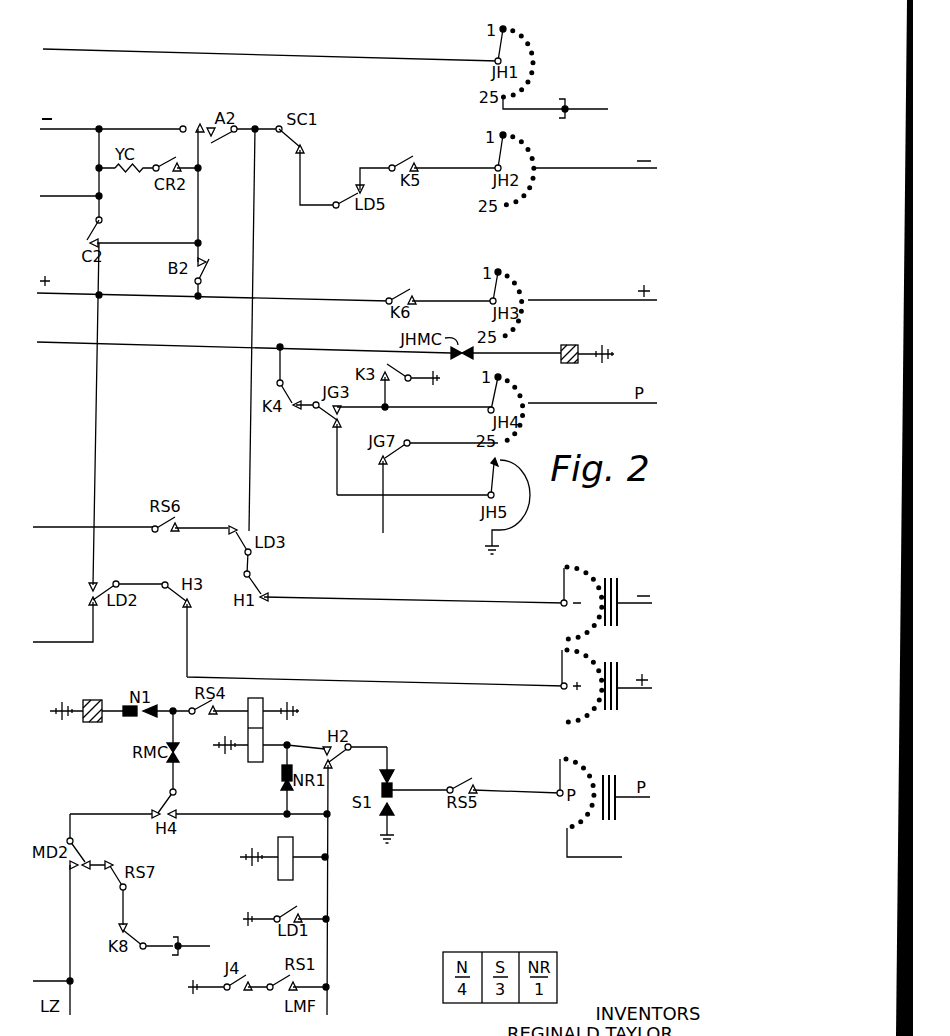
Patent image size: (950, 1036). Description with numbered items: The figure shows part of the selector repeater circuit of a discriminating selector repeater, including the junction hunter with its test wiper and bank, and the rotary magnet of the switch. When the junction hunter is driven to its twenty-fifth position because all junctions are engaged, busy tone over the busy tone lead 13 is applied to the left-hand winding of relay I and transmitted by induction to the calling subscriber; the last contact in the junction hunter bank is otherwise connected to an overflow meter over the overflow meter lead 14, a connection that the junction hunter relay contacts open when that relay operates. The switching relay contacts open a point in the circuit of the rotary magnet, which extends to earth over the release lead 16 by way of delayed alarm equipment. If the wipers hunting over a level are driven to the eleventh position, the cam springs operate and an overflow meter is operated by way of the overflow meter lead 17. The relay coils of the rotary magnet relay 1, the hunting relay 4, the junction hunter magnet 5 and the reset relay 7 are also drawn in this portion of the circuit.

The busy tone lead 13 is at (591, 107).
The overflow meter lead 14 is at (383, 520).
The rotary magnet release lead 16 is at (197, 950).
The overflow meter lead 17 is at (608, 862).
The relay RM 1 is at (83, 683).
The relay H 4 is at (243, 787).
The relay JHM 5 is at (562, 330).
The relay RS 7 is at (299, 878).